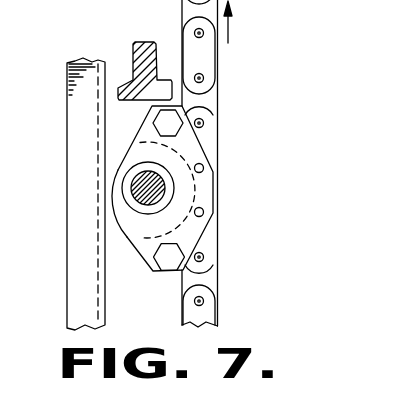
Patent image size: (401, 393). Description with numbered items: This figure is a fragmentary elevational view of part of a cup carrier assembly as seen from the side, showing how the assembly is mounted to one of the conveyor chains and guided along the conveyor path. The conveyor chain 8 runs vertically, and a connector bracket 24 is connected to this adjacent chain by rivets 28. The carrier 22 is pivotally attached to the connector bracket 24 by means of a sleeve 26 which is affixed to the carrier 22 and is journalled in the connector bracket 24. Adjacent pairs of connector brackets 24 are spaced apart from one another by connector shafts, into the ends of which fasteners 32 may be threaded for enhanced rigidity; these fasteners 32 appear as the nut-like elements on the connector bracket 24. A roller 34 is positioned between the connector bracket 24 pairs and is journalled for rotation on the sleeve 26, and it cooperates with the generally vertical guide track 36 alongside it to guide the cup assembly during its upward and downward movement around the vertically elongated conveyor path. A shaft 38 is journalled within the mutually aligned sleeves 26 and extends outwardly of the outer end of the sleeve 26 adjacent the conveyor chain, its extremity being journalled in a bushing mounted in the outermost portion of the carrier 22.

The conveyor chain 8 is at (217, 70).
The carrier 22 is at (153, 43).
The connector bracket 24 is at (202, 151).
The sleeve 26 is at (133, 185).
The rivets 28 is at (204, 168).
The fasteners 32 is at (176, 126).
The roller 34 is at (114, 158).
The guide track 36 is at (70, 106).
The shaft 38 is at (142, 199).